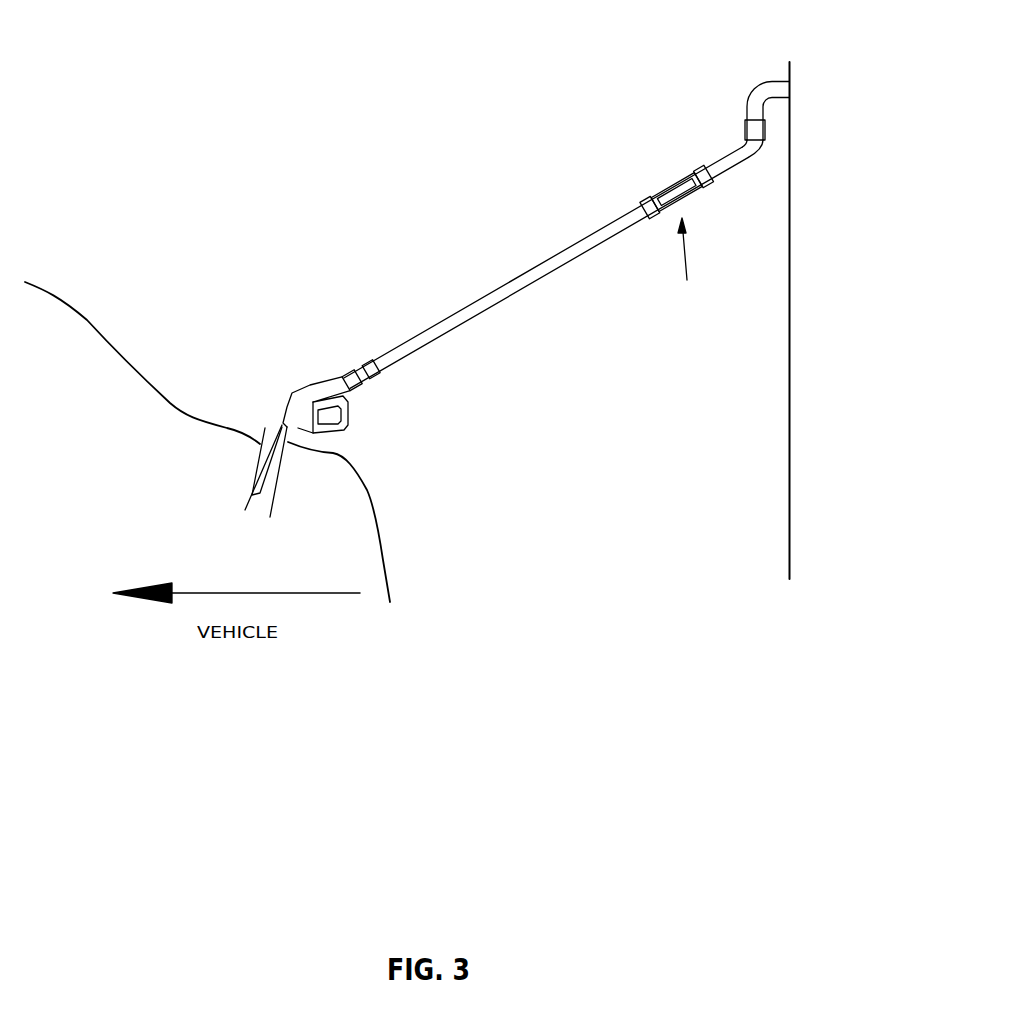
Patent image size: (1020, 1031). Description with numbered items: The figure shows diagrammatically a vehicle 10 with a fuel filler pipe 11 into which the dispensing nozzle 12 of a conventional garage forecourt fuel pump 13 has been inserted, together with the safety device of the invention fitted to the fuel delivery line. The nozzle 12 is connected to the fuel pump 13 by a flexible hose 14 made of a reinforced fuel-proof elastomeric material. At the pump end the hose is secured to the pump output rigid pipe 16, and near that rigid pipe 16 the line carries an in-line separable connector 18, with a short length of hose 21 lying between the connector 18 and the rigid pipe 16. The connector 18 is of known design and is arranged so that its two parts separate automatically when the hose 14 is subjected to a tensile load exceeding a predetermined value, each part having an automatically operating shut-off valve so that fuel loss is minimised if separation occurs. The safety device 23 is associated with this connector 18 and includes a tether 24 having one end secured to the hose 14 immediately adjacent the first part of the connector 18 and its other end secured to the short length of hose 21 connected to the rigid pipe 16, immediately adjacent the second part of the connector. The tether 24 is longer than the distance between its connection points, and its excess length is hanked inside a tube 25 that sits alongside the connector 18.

The vehicle 10 is at (115, 378).
The fuel filler pipe 11 is at (240, 447).
The dispensing nozzle 12 is at (300, 400).
The fuel pump 13 is at (800, 393).
The flexible hose 14 is at (423, 332).
The pump output rigid pipe 16 is at (763, 95).
The in-line separable connector 18 is at (670, 192).
The short length of hose 21 is at (728, 160).
The safety device 23 is at (684, 268).
The tether 24 is at (700, 190).
The tube 25 is at (688, 207).